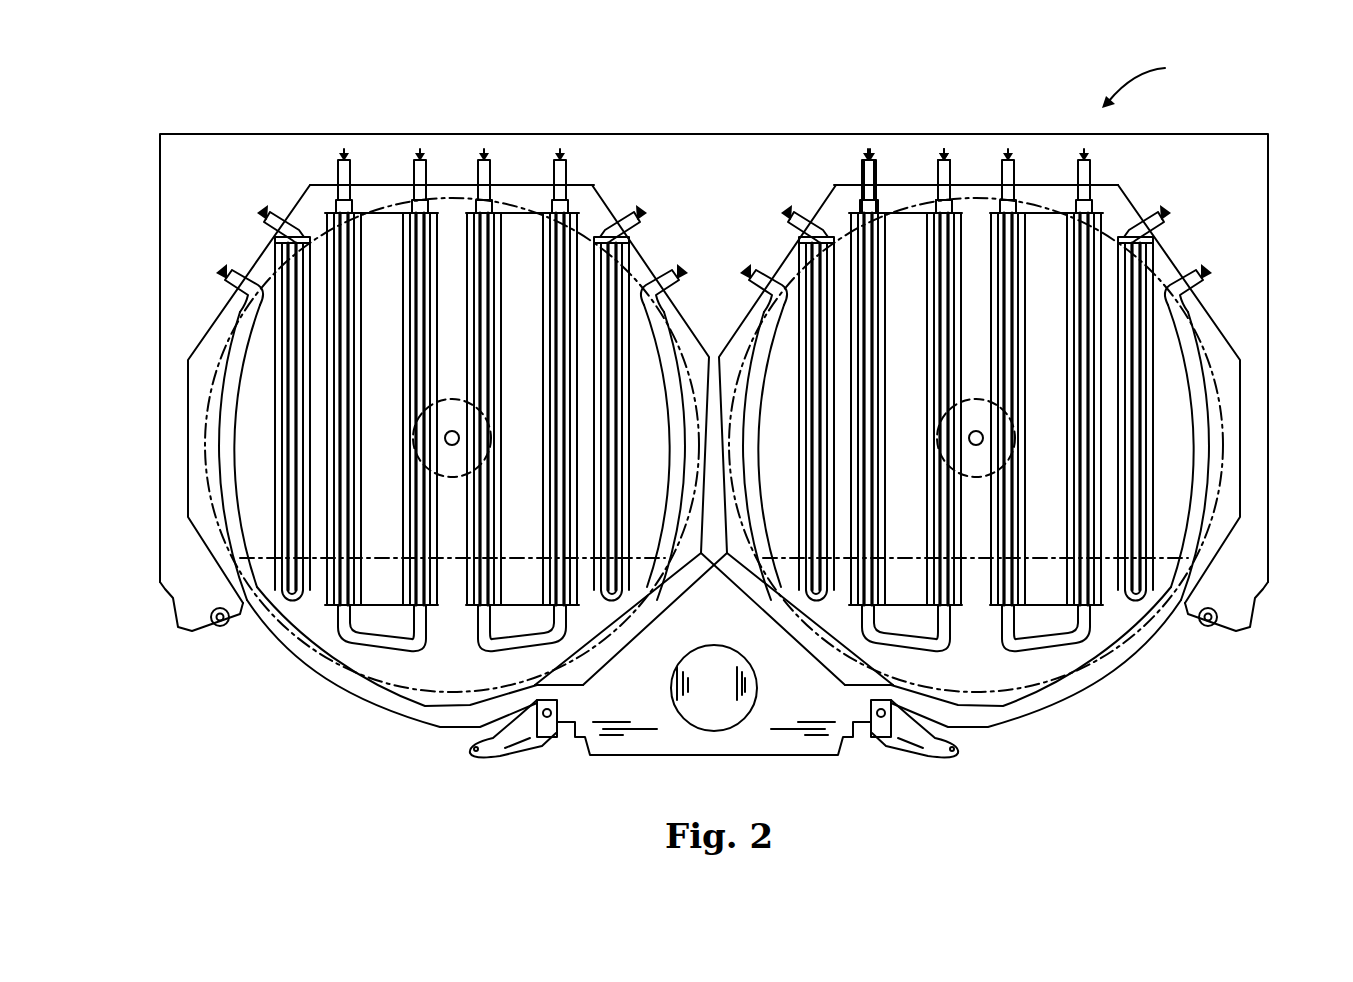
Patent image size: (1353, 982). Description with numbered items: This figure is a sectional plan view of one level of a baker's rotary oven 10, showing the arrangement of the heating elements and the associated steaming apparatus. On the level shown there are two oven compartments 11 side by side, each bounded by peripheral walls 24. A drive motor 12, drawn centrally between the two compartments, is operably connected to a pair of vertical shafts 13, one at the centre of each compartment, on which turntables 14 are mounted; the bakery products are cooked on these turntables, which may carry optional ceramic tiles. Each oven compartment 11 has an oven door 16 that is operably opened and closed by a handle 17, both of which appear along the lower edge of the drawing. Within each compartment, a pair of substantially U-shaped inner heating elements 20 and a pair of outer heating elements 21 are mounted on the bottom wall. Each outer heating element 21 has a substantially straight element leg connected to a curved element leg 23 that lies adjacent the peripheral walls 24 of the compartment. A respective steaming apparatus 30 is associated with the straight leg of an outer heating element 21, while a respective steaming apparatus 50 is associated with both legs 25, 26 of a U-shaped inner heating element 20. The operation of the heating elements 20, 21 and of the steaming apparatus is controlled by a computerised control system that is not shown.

The rotary oven 10 is at (1154, 82).
The oven compartment 11 is at (318, 198).
The drive motor 12 is at (723, 700).
The vertical shaft 13 is at (458, 432).
The turntable 14 is at (377, 678).
The oven door 16 is at (297, 678).
The handle 17 is at (508, 750).
The inner heating element 20 is at (478, 188).
The outer heating element 21 is at (270, 212).
The curved element leg 23 is at (1215, 393).
The peripheral wall 24 is at (1245, 490).
The leg of inner heating element 25 is at (868, 203).
The leg of inner heating element 26 is at (950, 195).
The steaming apparatus 30 is at (1118, 222).
The steaming apparatus 50 is at (910, 200).